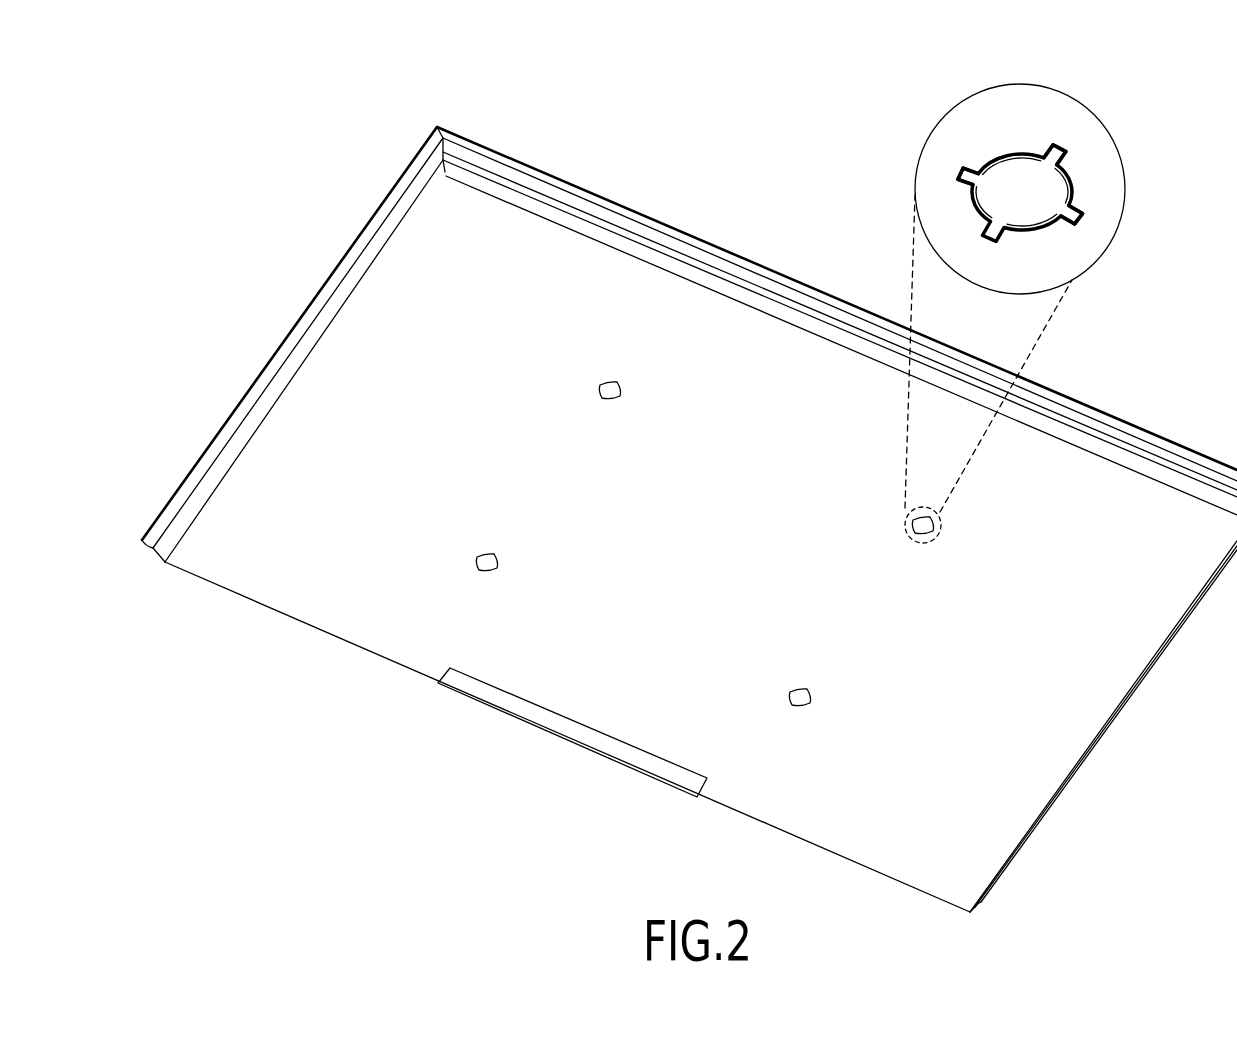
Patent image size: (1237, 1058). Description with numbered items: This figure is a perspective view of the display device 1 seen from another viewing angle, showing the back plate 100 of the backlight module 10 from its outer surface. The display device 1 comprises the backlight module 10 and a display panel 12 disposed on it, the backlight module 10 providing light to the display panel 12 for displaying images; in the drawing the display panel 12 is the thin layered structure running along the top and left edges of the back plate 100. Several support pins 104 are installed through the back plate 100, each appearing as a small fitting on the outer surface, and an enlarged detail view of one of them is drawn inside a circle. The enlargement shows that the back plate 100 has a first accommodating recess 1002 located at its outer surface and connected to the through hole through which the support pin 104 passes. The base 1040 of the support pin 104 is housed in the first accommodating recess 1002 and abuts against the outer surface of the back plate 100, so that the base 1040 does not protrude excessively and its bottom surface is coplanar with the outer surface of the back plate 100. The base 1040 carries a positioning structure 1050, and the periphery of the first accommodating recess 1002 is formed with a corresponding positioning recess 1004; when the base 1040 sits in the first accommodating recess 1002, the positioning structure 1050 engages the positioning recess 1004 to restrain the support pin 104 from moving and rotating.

The display device 1 is at (250, 132).
The backlight module 10 is at (328, 633).
The back plate 100 is at (213, 585).
The display panel 12 is at (1135, 422).
The support pin 104 is at (1000, 152).
The first accommodating recess 1002 is at (1053, 230).
The positioning recess 1004 is at (1093, 218).
The base 1040 is at (980, 188).
The positioning structure 1050 is at (1082, 204).